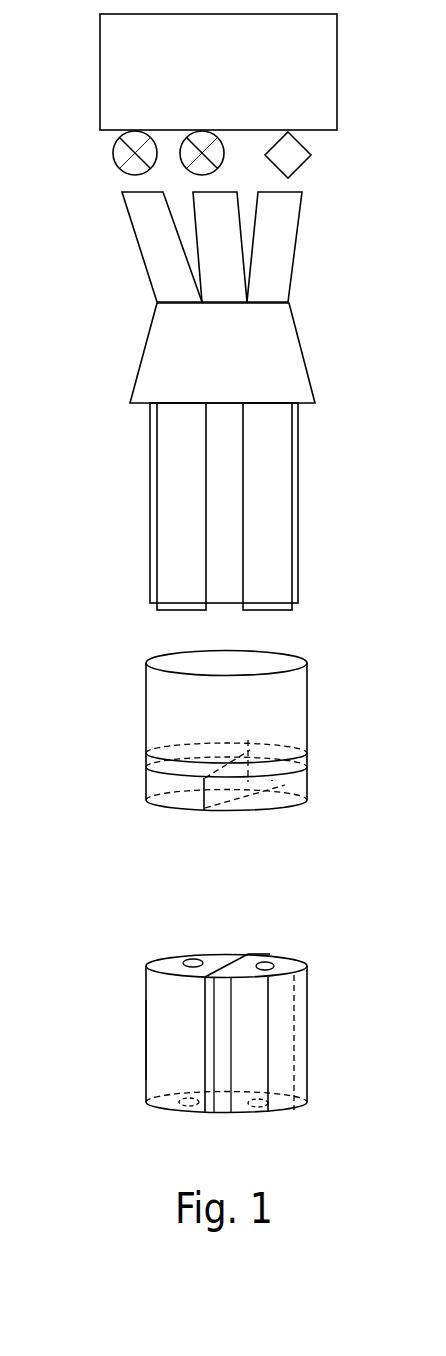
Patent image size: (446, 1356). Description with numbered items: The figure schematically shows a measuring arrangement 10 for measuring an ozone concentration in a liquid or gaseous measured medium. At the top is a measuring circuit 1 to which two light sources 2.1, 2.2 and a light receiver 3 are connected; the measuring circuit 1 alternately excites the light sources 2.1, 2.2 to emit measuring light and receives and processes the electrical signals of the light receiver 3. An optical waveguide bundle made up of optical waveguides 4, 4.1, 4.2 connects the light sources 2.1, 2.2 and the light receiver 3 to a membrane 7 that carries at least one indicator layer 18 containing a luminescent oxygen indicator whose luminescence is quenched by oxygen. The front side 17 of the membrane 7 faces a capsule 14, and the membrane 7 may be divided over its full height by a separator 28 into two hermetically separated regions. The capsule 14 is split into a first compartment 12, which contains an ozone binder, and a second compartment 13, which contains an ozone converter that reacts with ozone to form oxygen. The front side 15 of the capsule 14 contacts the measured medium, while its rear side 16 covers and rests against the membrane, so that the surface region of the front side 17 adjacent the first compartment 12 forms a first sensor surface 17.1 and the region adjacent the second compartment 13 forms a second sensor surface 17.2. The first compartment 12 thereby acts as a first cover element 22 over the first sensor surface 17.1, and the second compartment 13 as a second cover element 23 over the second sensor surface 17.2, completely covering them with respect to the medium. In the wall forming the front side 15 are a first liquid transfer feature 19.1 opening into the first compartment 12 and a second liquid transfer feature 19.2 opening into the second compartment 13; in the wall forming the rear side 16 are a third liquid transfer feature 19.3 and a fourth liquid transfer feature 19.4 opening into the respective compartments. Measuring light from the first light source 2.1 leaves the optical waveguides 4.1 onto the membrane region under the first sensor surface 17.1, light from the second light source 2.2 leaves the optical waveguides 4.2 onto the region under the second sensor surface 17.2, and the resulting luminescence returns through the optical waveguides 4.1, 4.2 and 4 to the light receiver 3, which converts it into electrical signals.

The measuring circuit 1 is at (236, 79).
The first light source 2.1 is at (122, 155).
The second light source 2.2 is at (203, 163).
The light receiver 3 is at (296, 158).
The optical waveguides 4 is at (155, 238).
The optical waveguides 4.1 is at (170, 489).
The optical waveguides 4.2 is at (272, 503).
The measuring arrangement 10 is at (235, 444).
The membrane 7 is at (217, 717).
The indicator layer 18 is at (146, 760).
The front side 17 is at (240, 812).
The first sensor surface 17.1 is at (180, 797).
The second sensor surface 17.2 is at (272, 802).
The separator 28 is at (247, 739).
The first compartment 12 is at (170, 1005).
The second compartment 13 is at (285, 1030).
The capsule 14 is at (146, 1072).
The front side 15 is at (240, 1113).
The rear side 16 is at (146, 965).
The first cover element 22 is at (146, 1088).
The second cover element 23 is at (300, 1070).
The first liquid transfer feature 19.1 is at (180, 1115).
The second liquid transfer feature 19.2 is at (275, 1113).
The third liquid transfer feature 19.3 is at (193, 960).
The fourth liquid transfer feature 19.4 is at (273, 965).